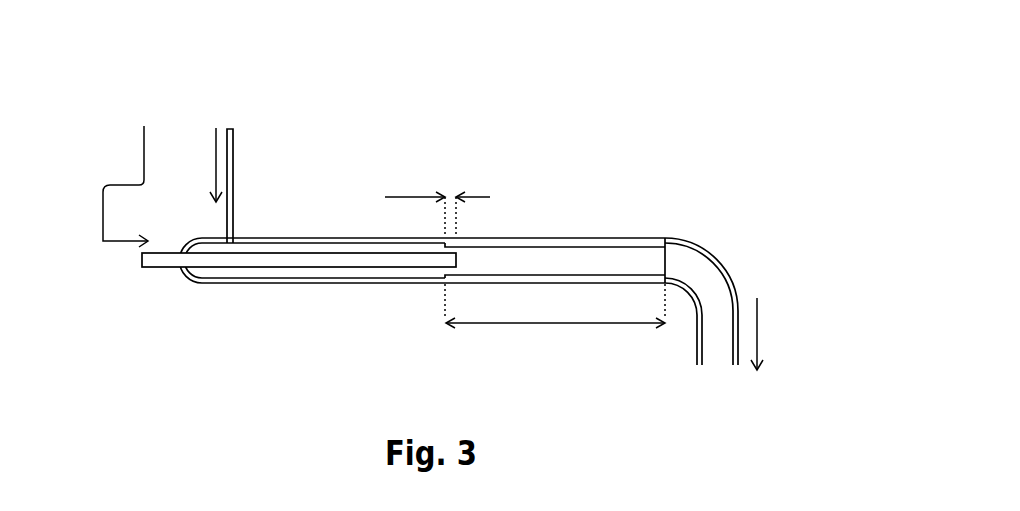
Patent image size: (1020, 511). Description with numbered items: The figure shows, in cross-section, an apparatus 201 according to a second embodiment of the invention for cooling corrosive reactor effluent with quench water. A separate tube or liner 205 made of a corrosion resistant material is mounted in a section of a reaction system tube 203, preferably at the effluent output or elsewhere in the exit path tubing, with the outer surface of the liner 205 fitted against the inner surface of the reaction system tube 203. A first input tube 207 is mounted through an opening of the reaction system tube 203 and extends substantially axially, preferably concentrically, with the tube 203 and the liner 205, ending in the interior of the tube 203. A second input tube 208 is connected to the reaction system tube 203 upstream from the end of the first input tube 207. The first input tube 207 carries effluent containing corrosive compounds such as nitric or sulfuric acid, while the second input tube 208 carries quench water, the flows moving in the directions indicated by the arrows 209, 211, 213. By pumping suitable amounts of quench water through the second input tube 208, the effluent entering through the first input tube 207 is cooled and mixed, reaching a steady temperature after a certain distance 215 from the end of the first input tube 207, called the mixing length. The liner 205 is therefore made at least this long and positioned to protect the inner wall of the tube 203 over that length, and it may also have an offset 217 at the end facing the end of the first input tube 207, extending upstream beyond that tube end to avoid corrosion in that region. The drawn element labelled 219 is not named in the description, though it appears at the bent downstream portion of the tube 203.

The apparatus 201 is at (516, 54).
The reaction system tube 203 is at (348, 287).
The liner 205 is at (667, 262).
The first input tube 207 is at (262, 267).
The second input tube 208 is at (235, 154).
The arrow 209 is at (131, 177).
The arrow 211 is at (214, 162).
The arrow 213 is at (757, 328).
The distance 215 is at (572, 323).
The offset 217 is at (430, 197).
The bent outlet tube 219 is at (730, 273).